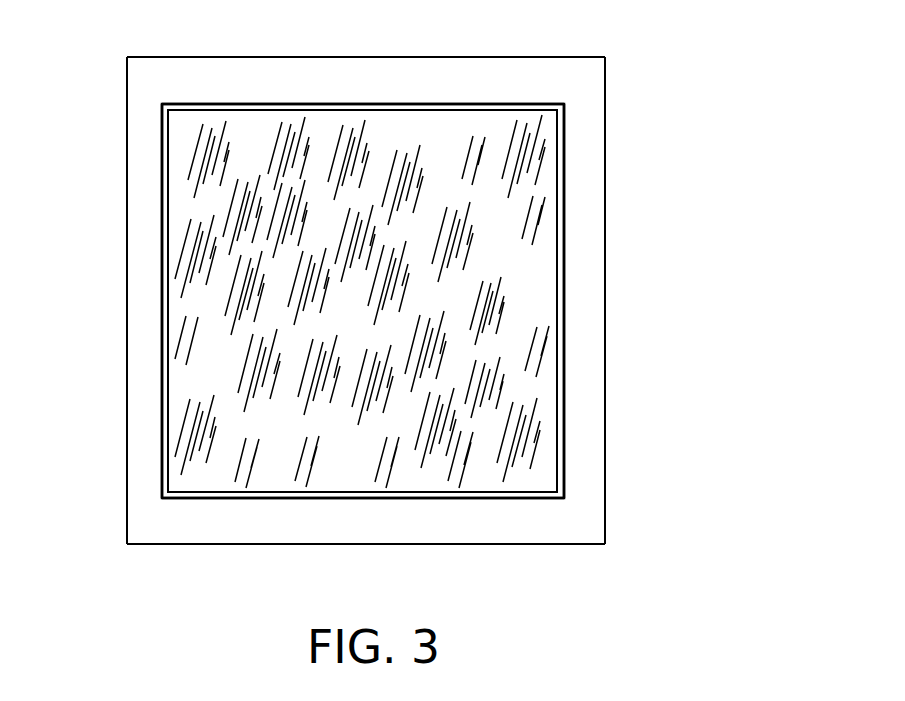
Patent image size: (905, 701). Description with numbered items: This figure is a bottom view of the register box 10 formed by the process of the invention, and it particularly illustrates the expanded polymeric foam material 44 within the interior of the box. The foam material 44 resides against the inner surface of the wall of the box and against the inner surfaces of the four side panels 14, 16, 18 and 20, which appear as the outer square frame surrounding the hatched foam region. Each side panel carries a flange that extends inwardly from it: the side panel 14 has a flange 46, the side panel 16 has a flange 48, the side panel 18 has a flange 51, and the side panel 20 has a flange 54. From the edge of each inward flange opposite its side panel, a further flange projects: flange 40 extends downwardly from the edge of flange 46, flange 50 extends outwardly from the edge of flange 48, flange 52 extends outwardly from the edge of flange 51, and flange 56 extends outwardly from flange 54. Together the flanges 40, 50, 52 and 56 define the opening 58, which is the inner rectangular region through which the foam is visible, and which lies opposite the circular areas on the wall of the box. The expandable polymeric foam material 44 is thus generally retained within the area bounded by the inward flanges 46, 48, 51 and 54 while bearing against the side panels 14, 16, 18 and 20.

The register box 10 is at (661, 90).
The side panel 14 is at (548, 545).
The side panel 16 is at (603, 368).
The side panel 18 is at (518, 57).
The side panel 20 is at (127, 298).
The flange 40 is at (213, 497).
The expanded polymeric foam material 44 is at (542, 174).
The flange 46 is at (342, 534).
The flange 48 is at (596, 280).
The flange 50 is at (557, 447).
The flange 51 is at (302, 96).
The flange 52 is at (406, 102).
The flange 54 is at (160, 260).
The flange 56 is at (163, 405).
The opening 58 is at (180, 195).